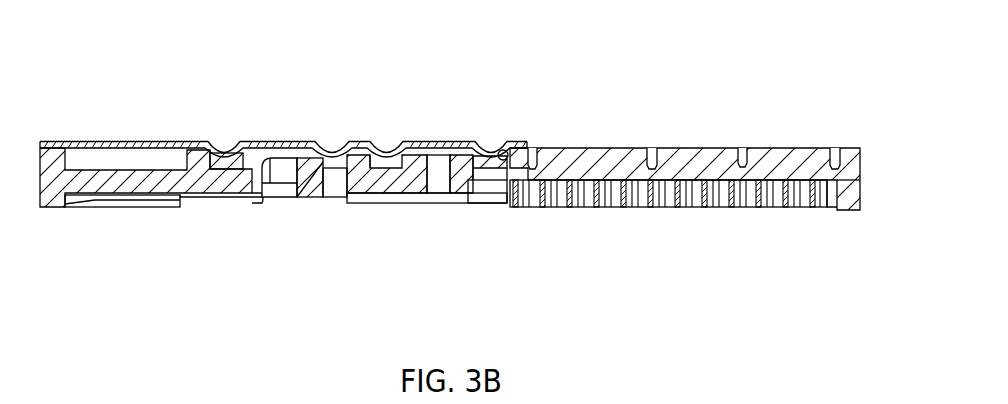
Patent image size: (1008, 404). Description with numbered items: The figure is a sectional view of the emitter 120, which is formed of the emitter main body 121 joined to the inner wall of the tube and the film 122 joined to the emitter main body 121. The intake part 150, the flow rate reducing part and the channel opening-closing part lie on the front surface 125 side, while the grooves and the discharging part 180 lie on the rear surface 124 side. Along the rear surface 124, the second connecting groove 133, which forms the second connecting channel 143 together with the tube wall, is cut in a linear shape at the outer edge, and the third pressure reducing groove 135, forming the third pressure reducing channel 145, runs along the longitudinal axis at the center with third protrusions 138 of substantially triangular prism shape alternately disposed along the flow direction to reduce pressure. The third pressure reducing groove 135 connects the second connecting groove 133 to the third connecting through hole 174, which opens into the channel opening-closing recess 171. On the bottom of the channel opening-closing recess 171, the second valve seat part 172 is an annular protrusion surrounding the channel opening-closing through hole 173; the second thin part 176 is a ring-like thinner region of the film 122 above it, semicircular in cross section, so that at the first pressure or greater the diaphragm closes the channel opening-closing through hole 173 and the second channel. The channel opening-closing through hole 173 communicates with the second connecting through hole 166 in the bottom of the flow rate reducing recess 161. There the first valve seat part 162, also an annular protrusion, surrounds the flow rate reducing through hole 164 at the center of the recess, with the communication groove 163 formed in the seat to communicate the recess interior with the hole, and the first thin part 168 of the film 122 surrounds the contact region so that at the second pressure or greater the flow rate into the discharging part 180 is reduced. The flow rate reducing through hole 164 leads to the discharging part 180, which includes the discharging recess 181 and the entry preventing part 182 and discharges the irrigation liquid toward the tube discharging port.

The emitter 120 is at (782, 51).
The emitter main body 121 is at (283, 121).
The film 122 is at (60, 141).
The rear surface 124 is at (714, 147).
The front surface 125 is at (696, 175).
The second connecting groove 133 is at (685, 242).
The second connecting channel 143 is at (703, 207).
The third pressure reducing groove 135 is at (685, 242).
The third pressure reducing channel 145 is at (685, 242).
The third protrusions 138 is at (590, 207).
The intake part 150 is at (696, 175).
The flow rate reducing recess 161 is at (224, 109).
The first valve seat part 162 is at (217, 145).
The communication groove 163 is at (224, 109).
The flow rate reducing through hole 164 is at (283, 200).
The second connecting through hole 166 is at (337, 200).
The first thin part 168 is at (327, 145).
The channel opening-closing recess 171 is at (470, 143).
The second valve seat part 172 is at (507, 105).
The channel opening-closing through hole 173 is at (443, 204).
The third connecting through hole 174 is at (490, 180).
The second thin part 176 is at (387, 145).
The discharging part 180 is at (168, 224).
The discharging recess 181 is at (168, 224).
The entry preventing part 182 is at (240, 260).